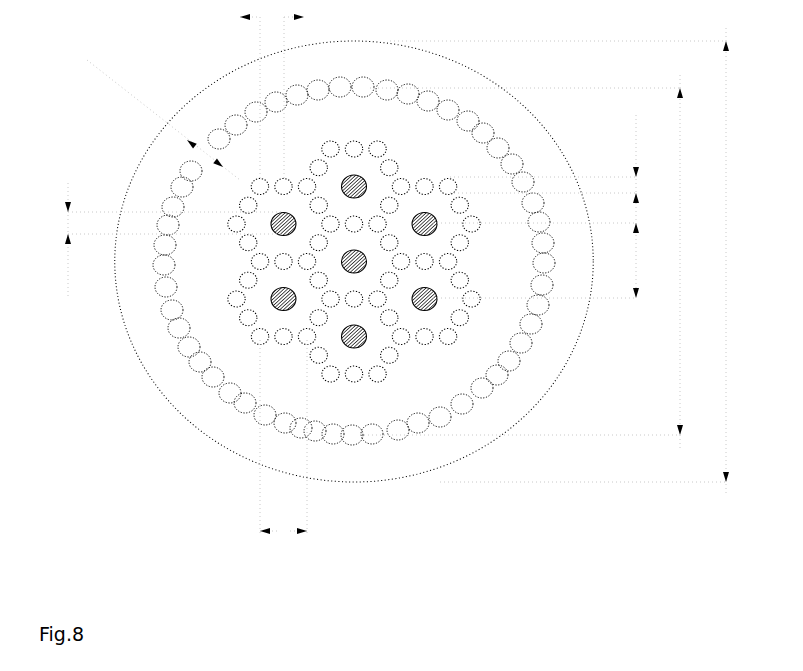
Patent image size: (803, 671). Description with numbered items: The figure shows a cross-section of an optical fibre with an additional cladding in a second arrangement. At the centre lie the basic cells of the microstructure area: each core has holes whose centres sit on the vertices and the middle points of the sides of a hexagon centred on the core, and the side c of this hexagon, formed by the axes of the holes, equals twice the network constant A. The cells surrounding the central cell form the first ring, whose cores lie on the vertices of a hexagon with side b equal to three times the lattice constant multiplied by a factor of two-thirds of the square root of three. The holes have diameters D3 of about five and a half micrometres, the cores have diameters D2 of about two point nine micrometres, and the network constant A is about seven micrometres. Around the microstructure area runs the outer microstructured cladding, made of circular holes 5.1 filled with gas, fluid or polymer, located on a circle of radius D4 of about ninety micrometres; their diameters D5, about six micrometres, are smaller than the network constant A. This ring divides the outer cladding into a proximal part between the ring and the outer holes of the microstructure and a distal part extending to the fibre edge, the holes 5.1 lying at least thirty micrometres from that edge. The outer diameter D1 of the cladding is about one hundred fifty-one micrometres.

The holes making the additional cladding 5.1 is at (500, 378).
The network constant A is at (288, 90).
The side of the hexagon of first-ring cores b is at (536, 260).
The side of the hexagon of hole axes c is at (283, 437).
The outer diameter of the cladding D1 is at (559, 261).
The core diameter D2 is at (163, 240).
The hole diameter D3 is at (544, 169).
The radius of the additional cladding D4 is at (521, 261).
The diameter of the holes of the additional cladding D5 is at (163, 112).